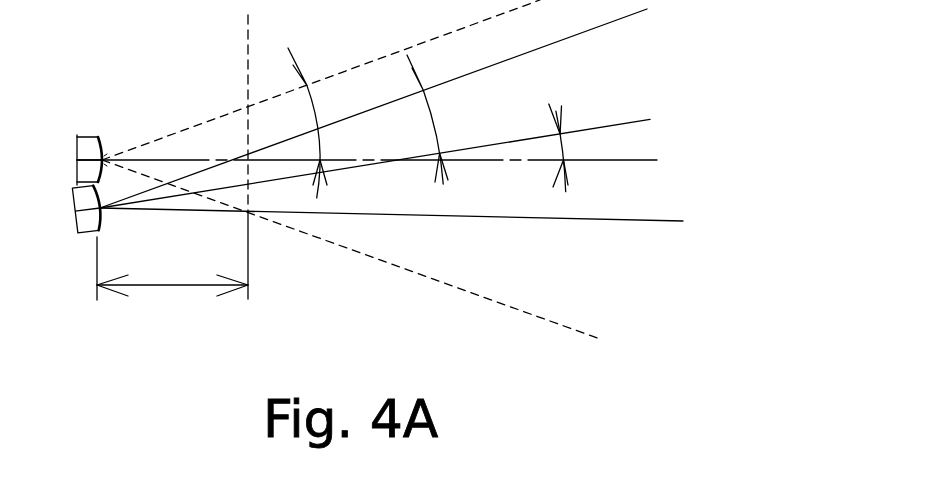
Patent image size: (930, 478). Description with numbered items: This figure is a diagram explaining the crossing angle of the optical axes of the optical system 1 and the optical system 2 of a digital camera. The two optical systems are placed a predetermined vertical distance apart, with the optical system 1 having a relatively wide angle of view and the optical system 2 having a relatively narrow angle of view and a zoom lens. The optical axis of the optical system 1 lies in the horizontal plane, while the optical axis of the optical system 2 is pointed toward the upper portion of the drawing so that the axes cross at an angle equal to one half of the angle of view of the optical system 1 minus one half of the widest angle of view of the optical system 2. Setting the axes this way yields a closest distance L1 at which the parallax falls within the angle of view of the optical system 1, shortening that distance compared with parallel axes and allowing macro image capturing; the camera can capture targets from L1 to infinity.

The optical system 1 is at (90, 137).
The optical system 2 is at (92, 233).
The closest distance L1 is at (172, 268).